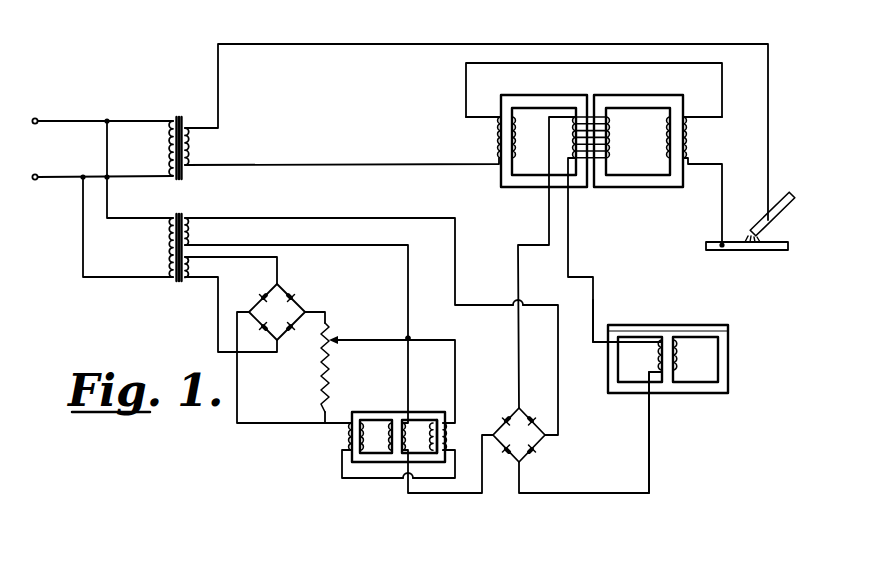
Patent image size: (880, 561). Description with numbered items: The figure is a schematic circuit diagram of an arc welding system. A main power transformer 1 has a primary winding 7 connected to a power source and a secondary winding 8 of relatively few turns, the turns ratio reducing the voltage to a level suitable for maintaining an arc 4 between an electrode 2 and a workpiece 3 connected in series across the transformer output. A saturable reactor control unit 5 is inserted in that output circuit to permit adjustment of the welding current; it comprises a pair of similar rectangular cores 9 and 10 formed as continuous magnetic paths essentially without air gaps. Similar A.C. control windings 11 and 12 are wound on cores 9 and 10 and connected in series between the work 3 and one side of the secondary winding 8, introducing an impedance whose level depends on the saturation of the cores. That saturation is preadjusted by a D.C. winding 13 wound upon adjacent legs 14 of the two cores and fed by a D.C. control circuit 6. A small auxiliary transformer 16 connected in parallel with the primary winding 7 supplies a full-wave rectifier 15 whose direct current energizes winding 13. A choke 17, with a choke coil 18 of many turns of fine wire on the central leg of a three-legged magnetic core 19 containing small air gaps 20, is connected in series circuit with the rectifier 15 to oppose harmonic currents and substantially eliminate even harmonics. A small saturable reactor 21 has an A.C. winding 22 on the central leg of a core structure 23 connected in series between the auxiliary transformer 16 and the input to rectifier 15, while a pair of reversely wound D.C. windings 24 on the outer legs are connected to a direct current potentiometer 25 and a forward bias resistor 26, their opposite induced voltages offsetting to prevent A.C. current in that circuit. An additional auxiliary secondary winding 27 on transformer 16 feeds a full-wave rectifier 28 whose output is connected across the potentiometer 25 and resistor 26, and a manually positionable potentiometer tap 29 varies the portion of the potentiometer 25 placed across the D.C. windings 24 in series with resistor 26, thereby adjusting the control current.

The main power transformer 1 is at (178, 103).
The electrode 2 is at (763, 224).
The workpiece 3 is at (737, 251).
The arc 4 is at (749, 238).
The saturable reactor control unit 5 is at (455, 126).
The D.C. control circuit 6 is at (626, 270).
The primary winding 7 is at (165, 150).
The secondary winding 8 is at (195, 144).
The rectangular core 9 is at (533, 189).
The rectangular core 10 is at (641, 189).
The A.C. control winding 11 is at (518, 135).
The A.C. control winding 12 is at (688, 139).
The D.C. winding 13 is at (612, 136).
The adjacent legs 14 is at (600, 102).
The full-wave rectifier 15 is at (526, 443).
The auxiliary transformer 16 is at (180, 212).
The choke 17 is at (633, 404).
The choke coil 18 is at (679, 353).
The 3-legged magnetic core 19 is at (689, 392).
The air gaps 20 is at (615, 334).
The small saturable reactor 21 is at (425, 404).
The A.C. winding 22 is at (406, 447).
The core structure 23 is at (379, 413).
The D.C. windings 24 is at (349, 438).
The direct current potentiometer 25 is at (321, 351).
The forward bias resistor 26 is at (322, 391).
The auxiliary secondary winding 27 is at (196, 262).
The full-wave rectifier 28 is at (284, 321).
The potentiometer tap 29 is at (338, 336).